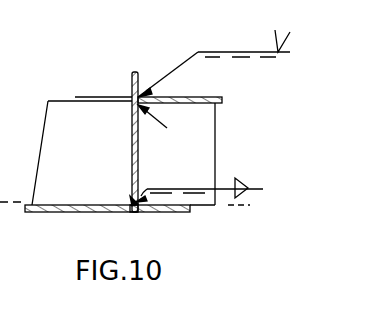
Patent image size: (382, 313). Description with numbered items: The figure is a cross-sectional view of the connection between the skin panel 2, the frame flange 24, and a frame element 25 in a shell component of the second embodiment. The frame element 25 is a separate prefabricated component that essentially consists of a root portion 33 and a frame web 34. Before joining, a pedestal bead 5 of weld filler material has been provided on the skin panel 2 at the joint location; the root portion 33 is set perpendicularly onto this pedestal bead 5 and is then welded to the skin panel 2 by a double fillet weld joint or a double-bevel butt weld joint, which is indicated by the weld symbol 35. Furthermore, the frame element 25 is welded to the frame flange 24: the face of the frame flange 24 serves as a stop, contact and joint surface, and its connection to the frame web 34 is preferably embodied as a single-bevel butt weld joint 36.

The skin panel 2 is at (173, 212).
The pedestal bead 5 is at (128, 213).
The frame flange 24 is at (208, 97).
The frame element 25 is at (132, 76).
The root portion 33 is at (128, 192).
The frame web 34 is at (131, 136).
The fillet weld symbol 35 is at (217, 193).
The single-bevel butt weld joint 36 is at (170, 130).